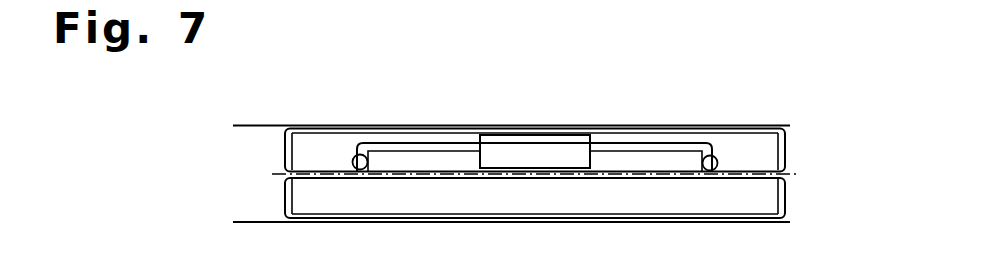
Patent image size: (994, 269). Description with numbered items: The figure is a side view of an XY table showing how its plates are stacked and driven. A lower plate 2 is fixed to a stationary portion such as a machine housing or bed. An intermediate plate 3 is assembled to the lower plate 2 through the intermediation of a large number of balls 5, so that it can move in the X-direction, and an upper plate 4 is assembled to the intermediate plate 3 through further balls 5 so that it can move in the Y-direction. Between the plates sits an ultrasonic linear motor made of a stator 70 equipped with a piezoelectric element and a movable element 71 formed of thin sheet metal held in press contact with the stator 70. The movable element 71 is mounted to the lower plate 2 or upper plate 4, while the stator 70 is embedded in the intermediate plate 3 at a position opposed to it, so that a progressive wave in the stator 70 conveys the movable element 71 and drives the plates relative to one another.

The lower plate 2 is at (797, 188).
The intermediate plate 3 is at (673, 158).
The upper plate 4 is at (789, 130).
The balls 5 is at (719, 162).
The stator 70 is at (498, 148).
The movable element 71 is at (567, 140).